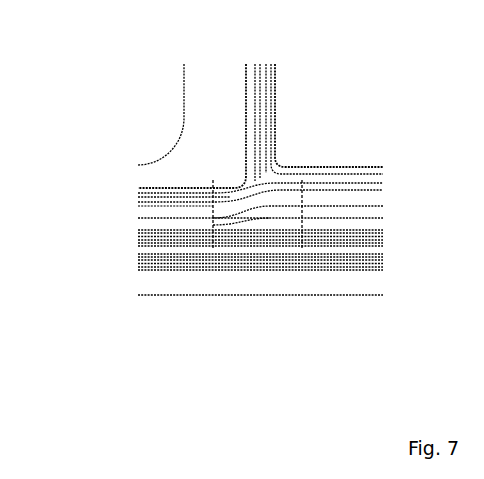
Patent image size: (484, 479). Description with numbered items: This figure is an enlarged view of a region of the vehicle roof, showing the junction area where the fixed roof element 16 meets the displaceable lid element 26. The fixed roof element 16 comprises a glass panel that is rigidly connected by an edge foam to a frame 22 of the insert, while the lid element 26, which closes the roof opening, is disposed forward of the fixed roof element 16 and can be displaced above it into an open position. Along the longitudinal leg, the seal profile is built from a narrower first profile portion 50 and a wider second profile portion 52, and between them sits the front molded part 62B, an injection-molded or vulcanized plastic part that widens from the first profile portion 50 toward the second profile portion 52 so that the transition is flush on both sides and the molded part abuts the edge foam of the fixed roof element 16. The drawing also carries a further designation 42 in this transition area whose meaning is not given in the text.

The fixed roof element 16 is at (360, 112).
The lid element 26 is at (193, 147).
The front molded part 62B is at (257, 235).
The second profile portion 52 is at (355, 245).
The first profile portion 50 is at (155, 232).
The layer 42 is at (157, 270).
The frame 22 is at (202, 283).